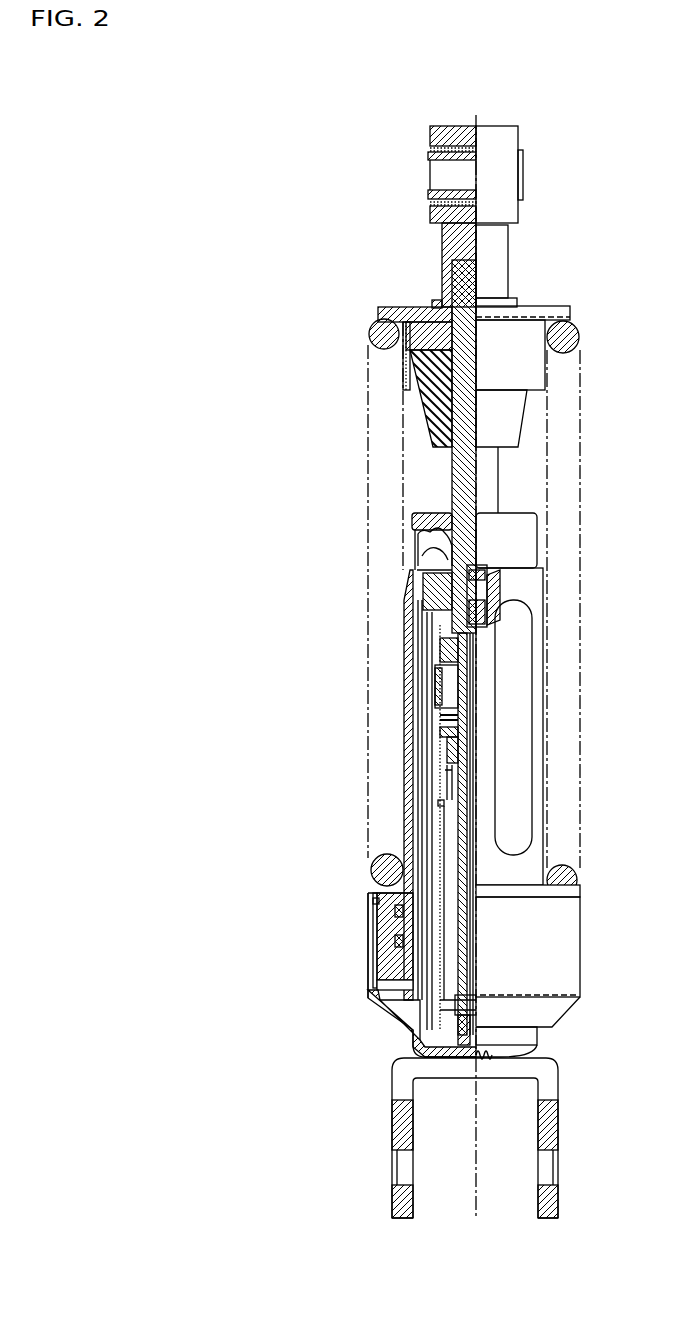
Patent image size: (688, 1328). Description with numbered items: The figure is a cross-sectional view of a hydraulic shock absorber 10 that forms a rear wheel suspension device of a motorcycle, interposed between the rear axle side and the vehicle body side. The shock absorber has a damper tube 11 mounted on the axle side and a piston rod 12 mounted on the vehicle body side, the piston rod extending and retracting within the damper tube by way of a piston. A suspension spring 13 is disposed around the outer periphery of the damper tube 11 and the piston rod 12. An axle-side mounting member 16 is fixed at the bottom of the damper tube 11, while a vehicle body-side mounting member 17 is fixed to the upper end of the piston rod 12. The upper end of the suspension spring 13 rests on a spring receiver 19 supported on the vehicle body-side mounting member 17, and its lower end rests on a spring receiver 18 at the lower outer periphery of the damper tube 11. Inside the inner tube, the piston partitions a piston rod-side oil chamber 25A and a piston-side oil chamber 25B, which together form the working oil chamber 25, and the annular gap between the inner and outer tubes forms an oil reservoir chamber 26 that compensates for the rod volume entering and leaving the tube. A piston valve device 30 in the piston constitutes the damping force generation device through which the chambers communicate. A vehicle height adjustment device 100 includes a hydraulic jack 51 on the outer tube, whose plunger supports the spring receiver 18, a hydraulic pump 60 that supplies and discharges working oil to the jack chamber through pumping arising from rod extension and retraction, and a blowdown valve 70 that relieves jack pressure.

The hydraulic shock absorber 10 is at (293, 278).
The damper tube 11 is at (405, 673).
The piston rod 12 is at (452, 492).
The suspension spring 13 is at (383, 872).
The axle-side mounting member 16 is at (392, 1127).
The vehicle body-side mounting member 17 is at (430, 132).
The spring receiver 18 is at (377, 890).
The spring receiver 19 is at (380, 322).
The working oil chamber 25 is at (452, 780).
The piston rod-side oil chamber 25A is at (442, 620).
The piston-side oil chamber 25B is at (452, 817).
The oil reservoir chamber 26 is at (423, 845).
The piston valve device 30 is at (419, 709).
The hydraulic jack 51 is at (357, 951).
The hydraulic pump 60 is at (492, 562).
The blowdown valve 70 is at (455, 995).
The vehicle height adjustment device 100 is at (360, 1012).